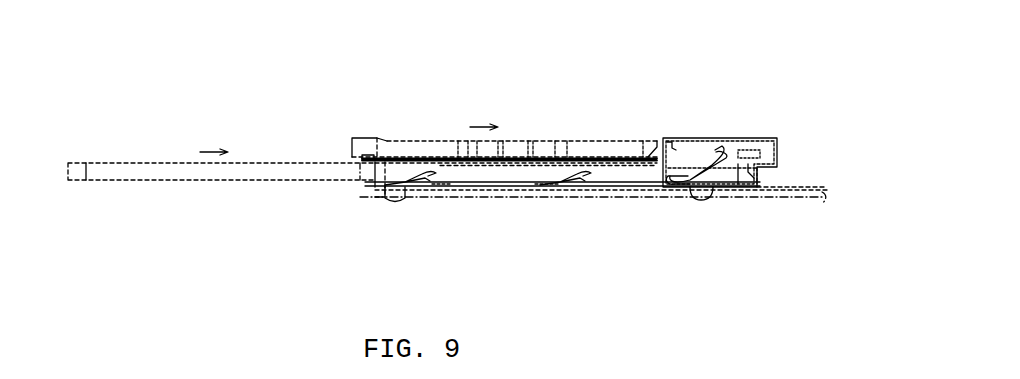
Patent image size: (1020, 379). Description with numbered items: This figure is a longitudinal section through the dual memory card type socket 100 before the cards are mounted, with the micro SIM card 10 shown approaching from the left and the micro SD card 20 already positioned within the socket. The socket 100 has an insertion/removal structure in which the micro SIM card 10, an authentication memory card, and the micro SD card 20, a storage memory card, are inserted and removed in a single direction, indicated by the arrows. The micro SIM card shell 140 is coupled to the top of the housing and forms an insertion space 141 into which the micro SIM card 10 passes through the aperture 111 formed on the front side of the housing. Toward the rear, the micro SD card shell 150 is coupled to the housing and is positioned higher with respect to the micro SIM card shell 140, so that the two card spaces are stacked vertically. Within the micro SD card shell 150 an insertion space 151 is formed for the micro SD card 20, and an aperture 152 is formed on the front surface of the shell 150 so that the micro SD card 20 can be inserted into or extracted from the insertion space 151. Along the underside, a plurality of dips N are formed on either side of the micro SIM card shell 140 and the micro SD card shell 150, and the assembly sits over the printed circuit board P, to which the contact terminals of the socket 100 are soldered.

The dual memory card type socket 100 is at (332, 66).
The micro SIM card 10 is at (159, 171).
The micro SD card 20 is at (419, 150).
The aperture 111 is at (368, 156).
The micro SIM card shell 140 is at (451, 143).
The insertion space 141 is at (553, 166).
The micro SD card shell 150 is at (765, 118).
The insertion space 151 is at (740, 152).
The aperture 152 is at (668, 141).
The dips N is at (394, 204).
The printed circuit board P is at (540, 200).